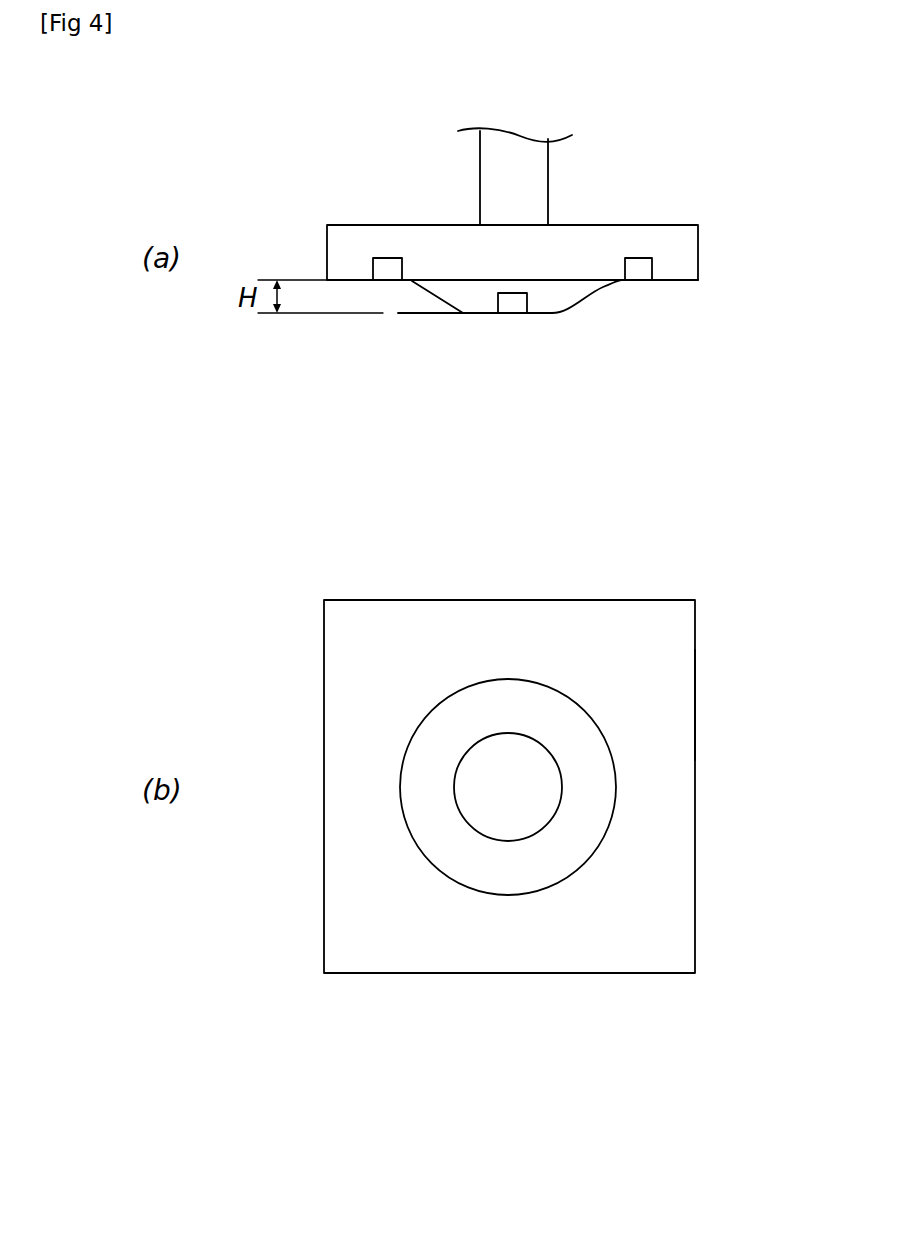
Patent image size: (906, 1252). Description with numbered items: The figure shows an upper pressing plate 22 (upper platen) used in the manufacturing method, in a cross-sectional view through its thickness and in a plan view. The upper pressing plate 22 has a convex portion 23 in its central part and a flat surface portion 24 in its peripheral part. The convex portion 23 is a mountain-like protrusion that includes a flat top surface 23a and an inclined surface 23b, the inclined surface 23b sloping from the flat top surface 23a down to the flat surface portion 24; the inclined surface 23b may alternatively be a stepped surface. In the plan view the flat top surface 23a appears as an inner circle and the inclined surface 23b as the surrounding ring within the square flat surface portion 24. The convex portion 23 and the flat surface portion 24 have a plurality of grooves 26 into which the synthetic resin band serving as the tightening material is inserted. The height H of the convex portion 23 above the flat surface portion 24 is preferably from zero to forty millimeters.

The upper pressing plate 22 is at (650, 222).
The convex portion 23 is at (525, 679).
The flat top surface 23a is at (509, 671).
The inclined surface 23b is at (590, 300).
The flat surface portion 24 is at (680, 283).
The grooves 26 is at (387, 283).